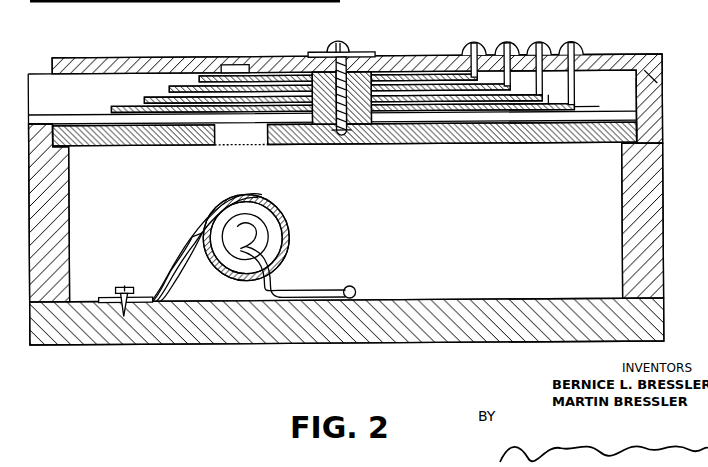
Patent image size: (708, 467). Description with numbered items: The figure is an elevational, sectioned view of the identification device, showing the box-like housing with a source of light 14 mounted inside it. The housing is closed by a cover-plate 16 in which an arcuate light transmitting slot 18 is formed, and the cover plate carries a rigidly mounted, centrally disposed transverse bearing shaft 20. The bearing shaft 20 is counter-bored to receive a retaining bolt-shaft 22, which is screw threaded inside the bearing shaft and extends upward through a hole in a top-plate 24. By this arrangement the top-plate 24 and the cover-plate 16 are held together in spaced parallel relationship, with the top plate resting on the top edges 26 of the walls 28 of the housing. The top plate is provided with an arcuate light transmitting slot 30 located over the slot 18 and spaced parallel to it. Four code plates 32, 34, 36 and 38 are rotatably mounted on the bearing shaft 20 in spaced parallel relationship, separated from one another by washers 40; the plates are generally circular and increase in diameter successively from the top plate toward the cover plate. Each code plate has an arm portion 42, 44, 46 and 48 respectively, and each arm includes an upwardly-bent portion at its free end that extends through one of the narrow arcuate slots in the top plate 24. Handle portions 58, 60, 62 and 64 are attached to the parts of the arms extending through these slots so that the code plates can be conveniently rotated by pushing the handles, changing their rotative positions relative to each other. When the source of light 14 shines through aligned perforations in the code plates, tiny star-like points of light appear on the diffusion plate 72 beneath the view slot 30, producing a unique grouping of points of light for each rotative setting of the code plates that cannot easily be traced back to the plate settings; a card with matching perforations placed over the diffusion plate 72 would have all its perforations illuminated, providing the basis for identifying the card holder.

The source of light 14 is at (260, 200).
The cover-plate 16 is at (455, 141).
The arcuate light transmitting slot 18 is at (216, 140).
The bearing shaft 20 is at (350, 136).
The retaining bolt-shaft 22 is at (332, 52).
The top-plate 24 is at (610, 57).
The top edges 26 is at (664, 97).
The walls 28 is at (664, 162).
The arcuate light transmitting slot 30 is at (276, 54).
The code plate 32 is at (549, 85).
The code plate 34 is at (541, 76).
The code plate 36 is at (170, 86).
The code plate 38 is at (200, 77).
The washers 40 is at (316, 98).
The arm portion 42 is at (450, 76).
The arm portion 44 is at (497, 89).
The arm portion 46 is at (562, 102).
The arm portion 48 is at (572, 86).
The handle portion 58 is at (470, 40).
The handle portion 60 is at (507, 40).
The handle portion 62 is at (542, 40).
The handle portion 64 is at (578, 40).
The diffusion plate 72 is at (234, 64).